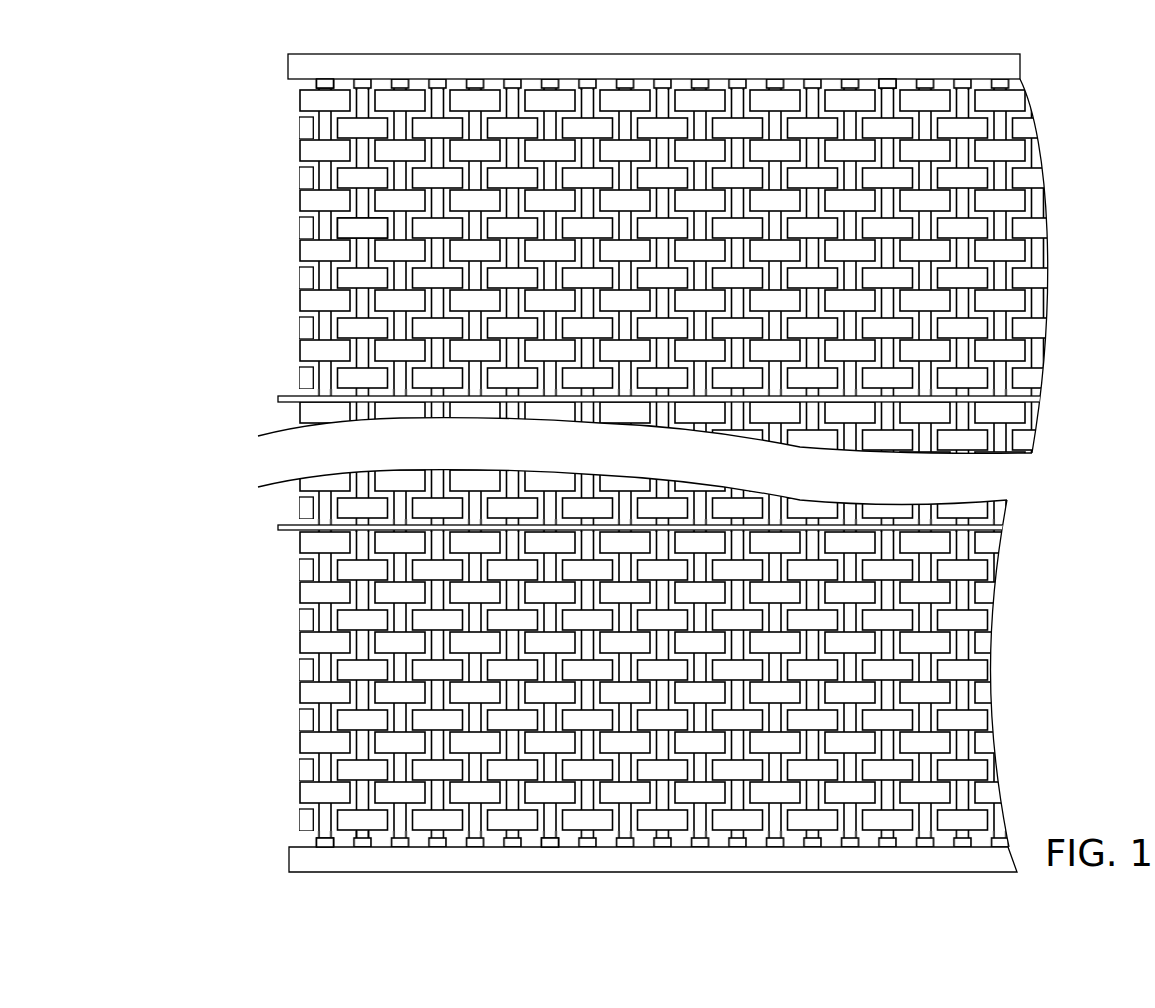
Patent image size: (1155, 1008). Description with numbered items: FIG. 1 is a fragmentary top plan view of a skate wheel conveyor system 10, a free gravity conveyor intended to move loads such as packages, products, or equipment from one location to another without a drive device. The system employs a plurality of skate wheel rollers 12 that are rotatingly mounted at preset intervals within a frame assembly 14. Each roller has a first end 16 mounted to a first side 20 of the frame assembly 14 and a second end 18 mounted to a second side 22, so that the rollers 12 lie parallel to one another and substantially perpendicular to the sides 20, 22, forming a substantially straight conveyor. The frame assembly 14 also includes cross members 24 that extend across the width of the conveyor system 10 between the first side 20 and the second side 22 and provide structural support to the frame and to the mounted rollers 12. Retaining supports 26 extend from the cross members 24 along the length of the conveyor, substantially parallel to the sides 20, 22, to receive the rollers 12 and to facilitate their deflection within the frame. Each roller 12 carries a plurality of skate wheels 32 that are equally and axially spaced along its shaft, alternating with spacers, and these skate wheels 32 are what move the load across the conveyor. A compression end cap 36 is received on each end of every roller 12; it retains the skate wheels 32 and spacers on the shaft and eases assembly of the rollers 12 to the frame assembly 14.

The skate wheel conveyor system 10 is at (642, 466).
The skate wheel rollers 12 is at (927, 613).
The frame assembly 14 is at (613, 466).
The first end 16 is at (325, 79).
The second end 18 is at (315, 842).
The first side 20 is at (597, 68).
The second side 22 is at (462, 858).
The cross members 24 is at (352, 835).
The retaining supports 26 is at (278, 399).
The skate wheels 32 is at (1015, 303).
The compression end cap 36 is at (887, 79).